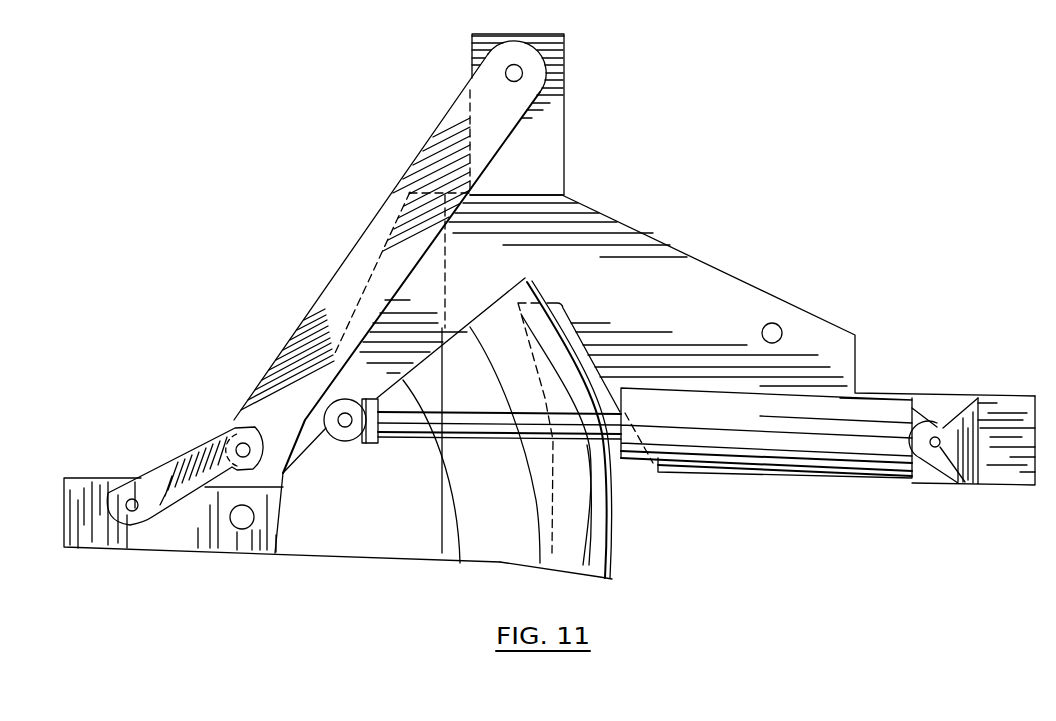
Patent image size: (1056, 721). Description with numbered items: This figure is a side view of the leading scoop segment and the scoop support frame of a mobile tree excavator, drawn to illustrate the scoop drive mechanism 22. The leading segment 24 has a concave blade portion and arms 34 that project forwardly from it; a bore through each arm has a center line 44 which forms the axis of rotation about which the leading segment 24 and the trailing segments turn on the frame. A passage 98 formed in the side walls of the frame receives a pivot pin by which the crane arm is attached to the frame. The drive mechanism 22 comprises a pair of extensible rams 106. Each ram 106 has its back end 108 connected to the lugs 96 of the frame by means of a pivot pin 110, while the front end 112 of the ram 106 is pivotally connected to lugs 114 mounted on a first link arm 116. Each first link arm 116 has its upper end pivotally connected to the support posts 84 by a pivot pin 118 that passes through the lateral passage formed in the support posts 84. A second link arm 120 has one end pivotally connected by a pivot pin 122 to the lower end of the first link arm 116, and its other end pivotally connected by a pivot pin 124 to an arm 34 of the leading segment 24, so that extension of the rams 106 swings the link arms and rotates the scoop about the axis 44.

The scoop drive mechanism 22 is at (658, 488).
The leading segment 24 is at (390, 537).
The arms 34 is at (88, 535).
The center line 44 is at (244, 529).
The support posts 84 is at (471, 53).
The lugs 96 is at (943, 448).
The passage 98 is at (780, 326).
The extensible ram 106 is at (755, 447).
The back end 108 is at (918, 460).
The pivot pin 110 is at (962, 483).
The front end 112 is at (368, 445).
The lugs 114 is at (324, 427).
The first link arm 116 is at (300, 327).
The pivot pin 118 is at (522, 73).
The second link arm 120 is at (163, 470).
The pivot pin 122 is at (238, 445).
The pivot pin 124 is at (137, 512).